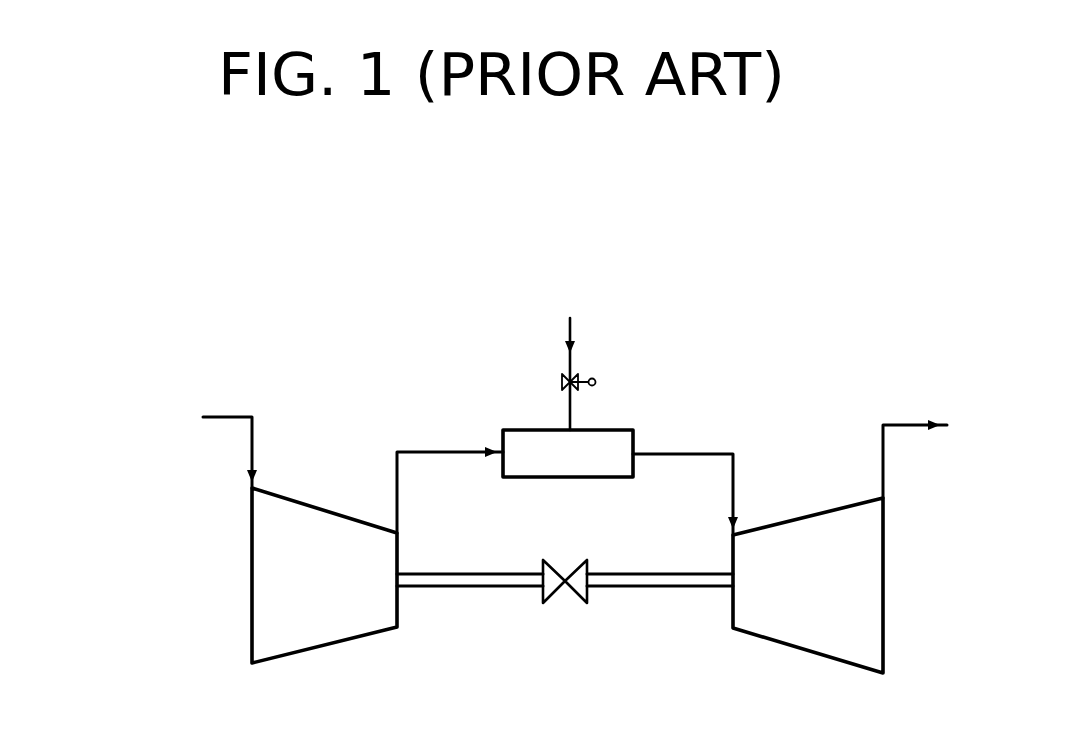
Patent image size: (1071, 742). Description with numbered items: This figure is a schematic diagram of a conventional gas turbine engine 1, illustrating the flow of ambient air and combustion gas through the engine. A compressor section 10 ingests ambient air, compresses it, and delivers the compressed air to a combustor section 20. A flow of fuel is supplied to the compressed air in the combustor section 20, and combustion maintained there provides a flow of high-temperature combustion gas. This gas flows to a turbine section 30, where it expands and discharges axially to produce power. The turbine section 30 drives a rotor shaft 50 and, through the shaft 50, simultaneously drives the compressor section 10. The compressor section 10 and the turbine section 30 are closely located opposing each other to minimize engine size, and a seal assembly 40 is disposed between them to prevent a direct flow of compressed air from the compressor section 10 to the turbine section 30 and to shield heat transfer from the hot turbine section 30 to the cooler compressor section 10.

The gas turbine engine 1 is at (286, 358).
The compressor section 10 is at (332, 630).
The combustor section 20 is at (515, 428).
The turbine section 30 is at (823, 635).
The seal assembly 40 is at (575, 605).
The rotor shaft 50 is at (667, 588).